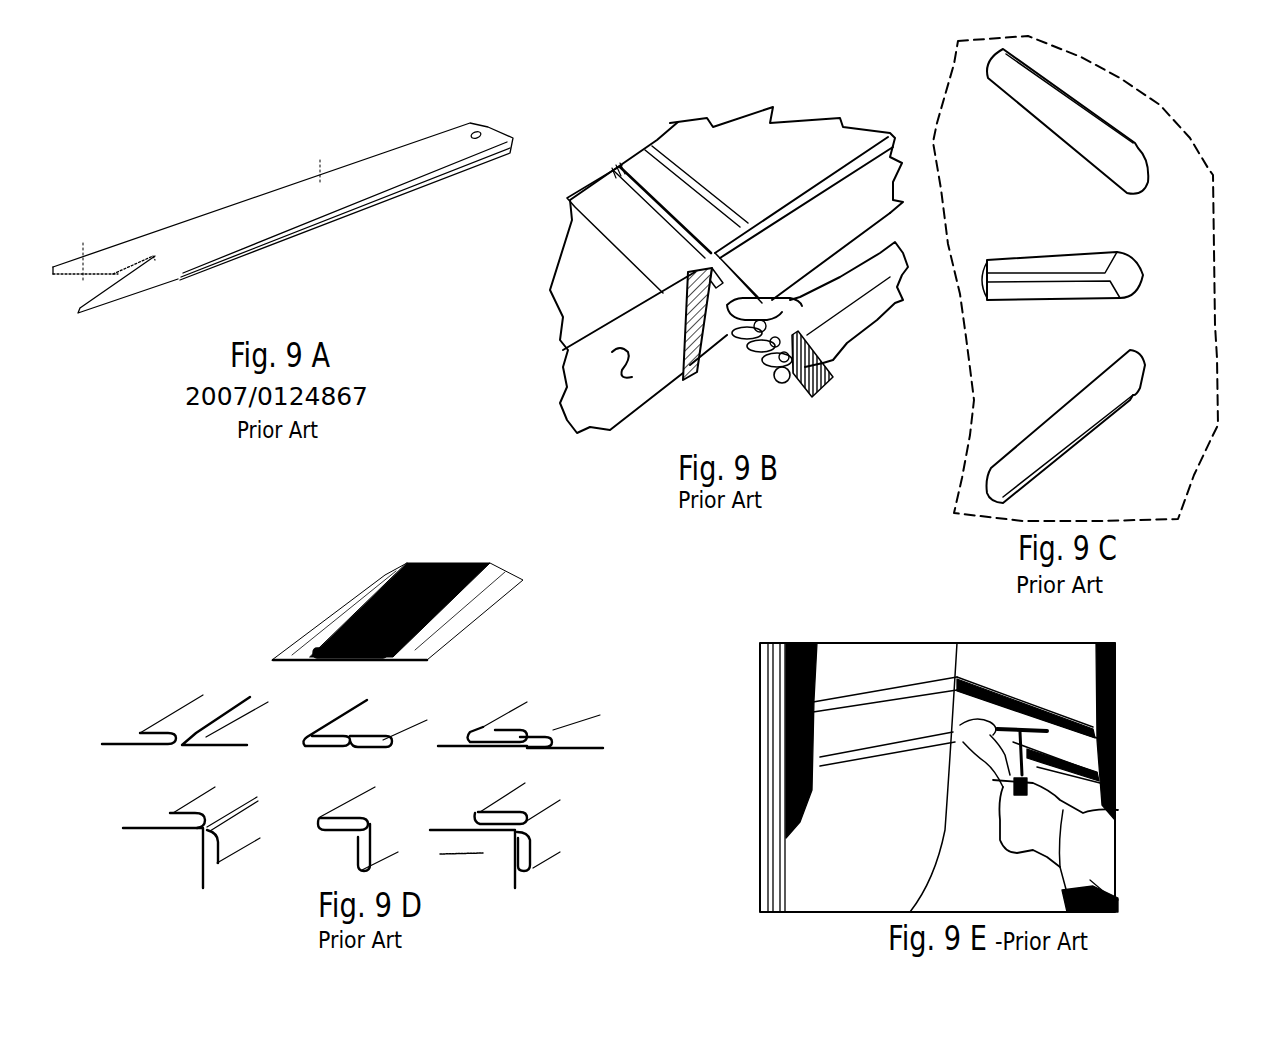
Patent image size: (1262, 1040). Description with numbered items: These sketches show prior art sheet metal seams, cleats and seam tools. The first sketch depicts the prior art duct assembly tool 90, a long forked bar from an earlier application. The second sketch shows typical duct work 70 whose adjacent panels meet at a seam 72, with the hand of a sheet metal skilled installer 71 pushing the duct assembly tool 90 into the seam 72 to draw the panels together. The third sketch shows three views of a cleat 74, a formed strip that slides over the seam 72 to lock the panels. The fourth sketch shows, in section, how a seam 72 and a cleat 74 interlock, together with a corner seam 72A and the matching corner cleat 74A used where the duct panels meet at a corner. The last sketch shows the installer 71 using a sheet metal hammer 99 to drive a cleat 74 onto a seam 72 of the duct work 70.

In FIG. 9A, the duct assembly tool 90 is at (320, 220).
In FIG. 9B, the duct assembly tool 90 is at (690, 363).
In FIG. 9B, the duct work 70 is at (617, 362).
In FIG. 9B, the sheet metal skilled installer 71 is at (857, 308).
In FIG. 9E, the sheet metal skilled installer 71 is at (1100, 827).
In FIG. 9B, the seam 72 is at (610, 180).
In FIG. 9D, the seam 72 is at (353, 657).
In FIG. 9E, the seam 72 is at (787, 803).
In FIG. 9D, the corner seam 72A is at (207, 828).
In FIG. 9C, the cleat 74 is at (1079, 121).
In FIG. 9D, the cleat 74 is at (395, 607).
In FIG. 9E, the cleat 74 is at (890, 760).
In FIG. 9D, the corner cleat 74A is at (365, 825).
In FIG. 9E, the sheet metal hammer 99 is at (1063, 712).